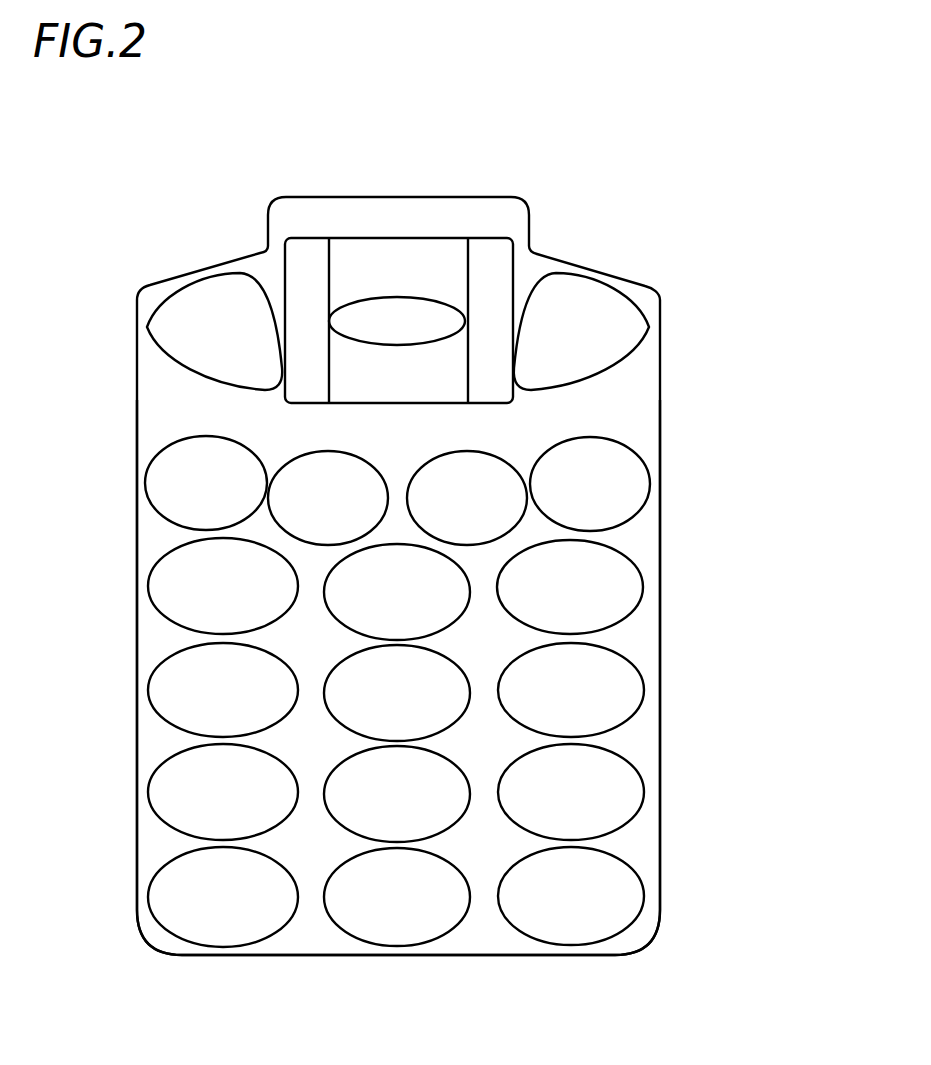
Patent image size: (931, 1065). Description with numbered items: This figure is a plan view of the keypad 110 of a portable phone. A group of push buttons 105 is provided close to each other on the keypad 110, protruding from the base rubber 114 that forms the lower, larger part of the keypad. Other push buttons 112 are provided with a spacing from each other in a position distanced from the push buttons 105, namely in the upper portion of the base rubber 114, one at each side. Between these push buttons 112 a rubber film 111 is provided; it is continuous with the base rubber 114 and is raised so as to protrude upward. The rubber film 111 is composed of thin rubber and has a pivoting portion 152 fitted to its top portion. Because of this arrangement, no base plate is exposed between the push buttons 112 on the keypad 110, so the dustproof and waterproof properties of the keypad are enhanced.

The keypad 110 is at (565, 172).
The rubber film 111 is at (359, 270).
The pivoting portion 152 is at (417, 300).
The push buttons 112 is at (197, 331).
The base rubber 114 is at (197, 409).
The push buttons 105 is at (590, 485).